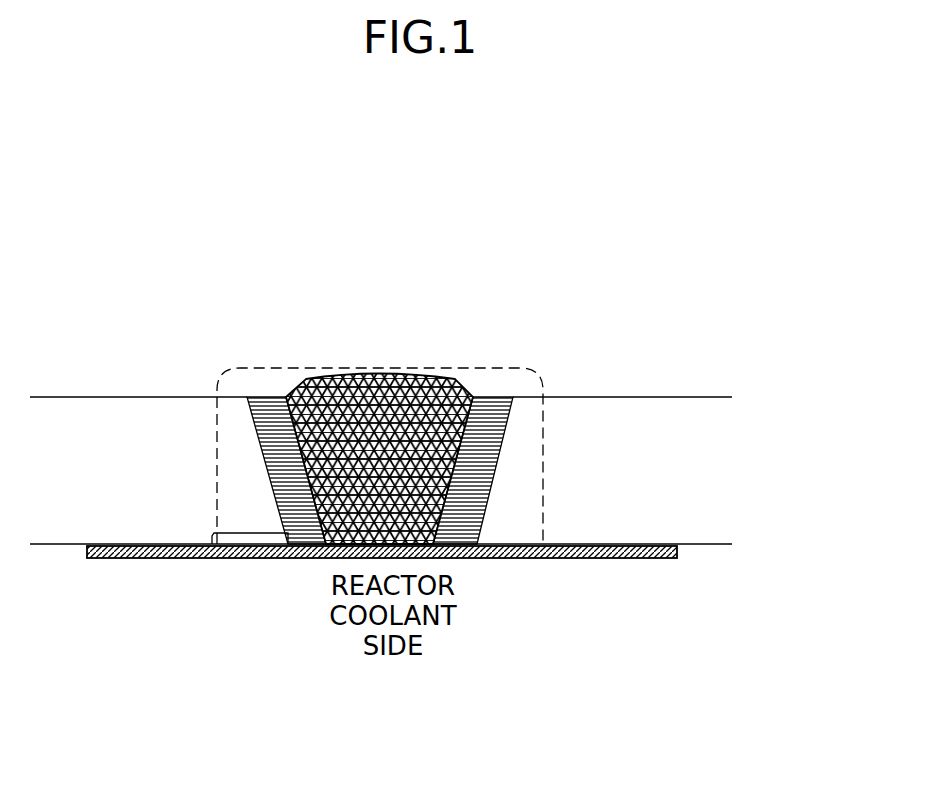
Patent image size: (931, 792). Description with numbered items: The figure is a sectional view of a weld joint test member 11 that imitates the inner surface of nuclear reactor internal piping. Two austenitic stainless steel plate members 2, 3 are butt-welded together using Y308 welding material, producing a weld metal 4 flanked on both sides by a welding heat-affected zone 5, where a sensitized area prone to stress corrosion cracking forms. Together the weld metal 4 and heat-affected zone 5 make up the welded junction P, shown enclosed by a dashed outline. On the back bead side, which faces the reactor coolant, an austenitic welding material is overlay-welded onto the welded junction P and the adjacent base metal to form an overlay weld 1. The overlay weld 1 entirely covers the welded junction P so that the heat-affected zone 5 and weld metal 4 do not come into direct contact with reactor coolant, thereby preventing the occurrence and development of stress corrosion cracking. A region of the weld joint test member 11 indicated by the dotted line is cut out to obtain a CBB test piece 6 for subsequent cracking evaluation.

The overlay weld 1 is at (592, 560).
The austenitic stainless steel member 2 is at (135, 403).
The austenitic stainless steel member 3 is at (648, 403).
The weld metal 4 is at (409, 377).
The welding heat-affected zone 5 is at (268, 400).
The CBB test piece 6 is at (222, 537).
The weld joint test member 11 is at (743, 222).
The welded junction P is at (534, 381).